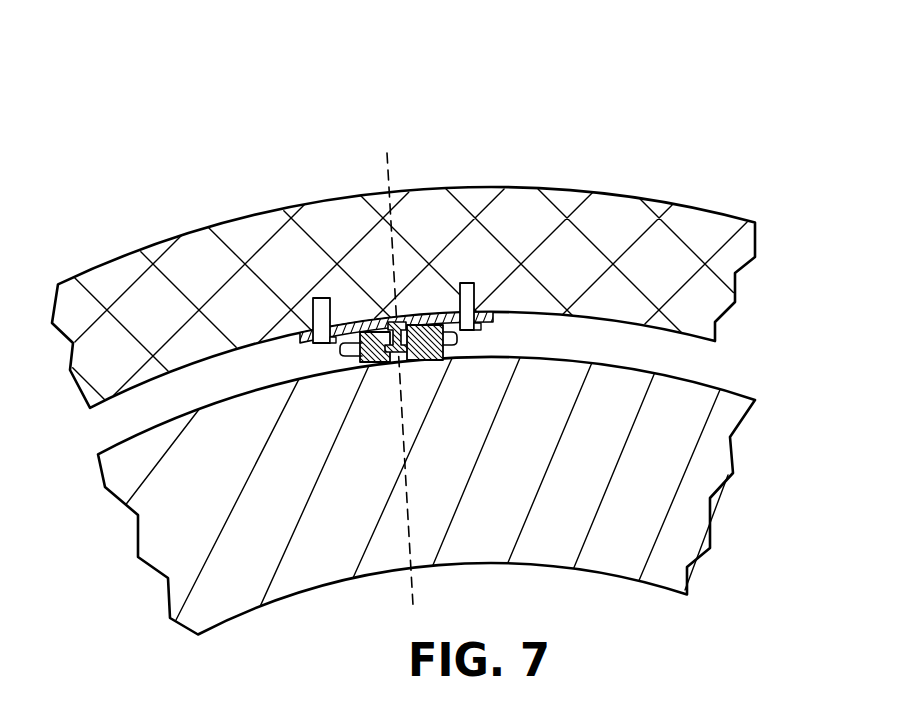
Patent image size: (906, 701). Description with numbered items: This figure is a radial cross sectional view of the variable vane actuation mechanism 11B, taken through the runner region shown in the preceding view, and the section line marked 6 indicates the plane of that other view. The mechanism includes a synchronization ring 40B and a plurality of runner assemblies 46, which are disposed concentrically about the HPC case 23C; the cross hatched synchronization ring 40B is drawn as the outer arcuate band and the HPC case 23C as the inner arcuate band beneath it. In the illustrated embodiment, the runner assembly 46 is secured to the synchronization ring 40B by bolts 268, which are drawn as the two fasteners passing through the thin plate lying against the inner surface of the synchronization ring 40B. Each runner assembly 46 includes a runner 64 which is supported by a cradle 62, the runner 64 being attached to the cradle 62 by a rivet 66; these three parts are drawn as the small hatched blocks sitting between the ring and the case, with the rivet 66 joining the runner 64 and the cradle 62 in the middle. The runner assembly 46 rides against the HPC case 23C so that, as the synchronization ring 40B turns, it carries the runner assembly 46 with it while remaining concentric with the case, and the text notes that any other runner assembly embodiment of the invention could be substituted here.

The variable vane actuation mechanism 11B is at (586, 140).
The synchronization ring 40B is at (628, 196).
The HPC case 23C is at (696, 382).
The bolts 268 is at (301, 336).
The runner assembly 46 is at (426, 385).
The cradle 62 is at (456, 346).
The runner 64 is at (362, 360).
The rivet 66 is at (397, 354).
The section line 6- 6 is at (387, 153).